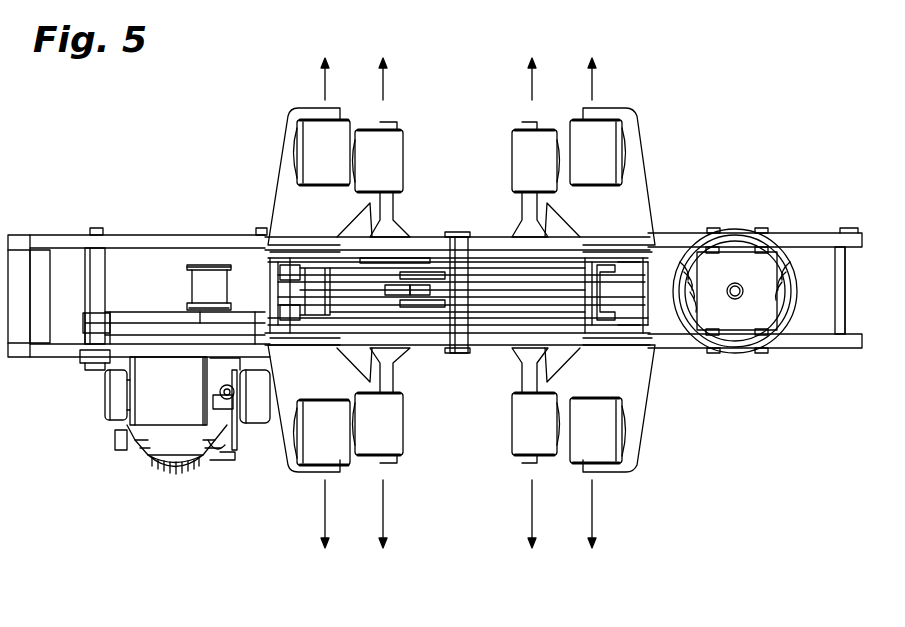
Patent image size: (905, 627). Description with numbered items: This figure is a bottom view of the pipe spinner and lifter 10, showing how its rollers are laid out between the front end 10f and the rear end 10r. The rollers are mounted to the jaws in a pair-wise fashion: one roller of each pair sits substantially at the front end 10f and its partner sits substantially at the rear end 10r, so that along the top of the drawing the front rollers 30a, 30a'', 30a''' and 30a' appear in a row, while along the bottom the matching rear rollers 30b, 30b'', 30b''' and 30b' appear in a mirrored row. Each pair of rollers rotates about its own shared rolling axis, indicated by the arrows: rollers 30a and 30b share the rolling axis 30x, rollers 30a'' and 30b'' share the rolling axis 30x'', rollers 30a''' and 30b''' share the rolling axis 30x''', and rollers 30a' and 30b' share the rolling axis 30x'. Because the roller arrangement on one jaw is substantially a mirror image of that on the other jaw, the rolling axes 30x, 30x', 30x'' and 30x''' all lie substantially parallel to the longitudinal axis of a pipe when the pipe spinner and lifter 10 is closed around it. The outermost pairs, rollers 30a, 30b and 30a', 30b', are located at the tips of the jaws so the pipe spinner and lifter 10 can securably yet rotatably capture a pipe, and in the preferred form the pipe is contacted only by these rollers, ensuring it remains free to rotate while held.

The pipe spinner and lifter 10 is at (435, 267).
The front end 10f is at (692, 104).
The rear end 10r is at (705, 440).
The roller 30a is at (276, 145).
The roller 30a' is at (648, 152).
The roller 30a'' is at (411, 153).
The roller 30a''' is at (492, 158).
The roller 30b is at (266, 453).
The roller 30b' is at (654, 456).
The roller 30b'' is at (414, 437).
The roller 30b''' is at (494, 428).
The rolling axis 30x is at (289, 303).
The rolling axis 30x' is at (629, 303).
The rolling axis 30x'' is at (410, 309).
The rolling axis 30x''' is at (505, 303).